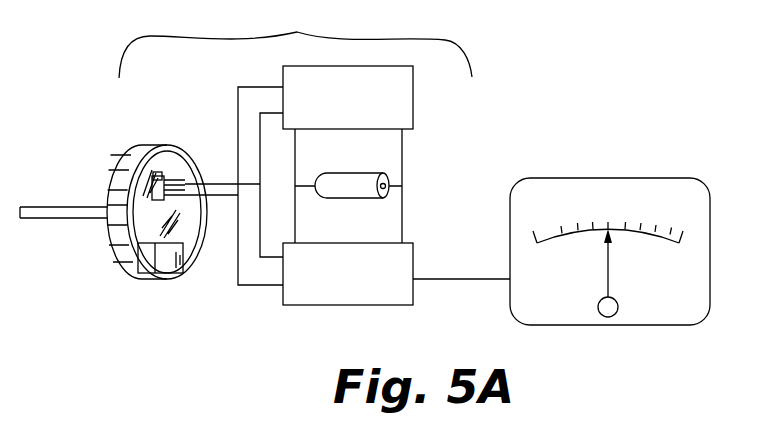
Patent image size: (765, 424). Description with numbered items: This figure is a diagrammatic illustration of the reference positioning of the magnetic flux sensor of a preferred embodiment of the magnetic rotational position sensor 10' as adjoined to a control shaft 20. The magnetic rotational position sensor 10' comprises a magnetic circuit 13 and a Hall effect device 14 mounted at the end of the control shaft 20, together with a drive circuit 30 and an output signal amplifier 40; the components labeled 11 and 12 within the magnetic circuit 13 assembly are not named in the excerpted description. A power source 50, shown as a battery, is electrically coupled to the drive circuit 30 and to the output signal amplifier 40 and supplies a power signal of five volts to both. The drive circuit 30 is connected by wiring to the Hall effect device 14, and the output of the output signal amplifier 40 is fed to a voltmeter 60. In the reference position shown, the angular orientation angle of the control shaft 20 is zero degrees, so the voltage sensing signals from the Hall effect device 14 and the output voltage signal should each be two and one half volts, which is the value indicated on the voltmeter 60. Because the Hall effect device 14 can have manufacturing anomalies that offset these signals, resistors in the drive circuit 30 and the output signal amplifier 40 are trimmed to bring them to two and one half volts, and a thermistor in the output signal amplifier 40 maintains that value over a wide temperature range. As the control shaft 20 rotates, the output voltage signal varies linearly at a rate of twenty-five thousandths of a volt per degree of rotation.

The magnetic rotational position sensor 10' is at (295, 42).
The disc 11 is at (125, 170).
The box 12 is at (180, 278).
The magnetic circuit 13 is at (128, 298).
The Hall effect device 14 is at (163, 172).
The control shaft 20 is at (60, 207).
The drive circuit 30 is at (414, 113).
The output signal amplifier 40 is at (414, 257).
The power source 50 is at (373, 170).
The voltmeter 60 is at (663, 178).